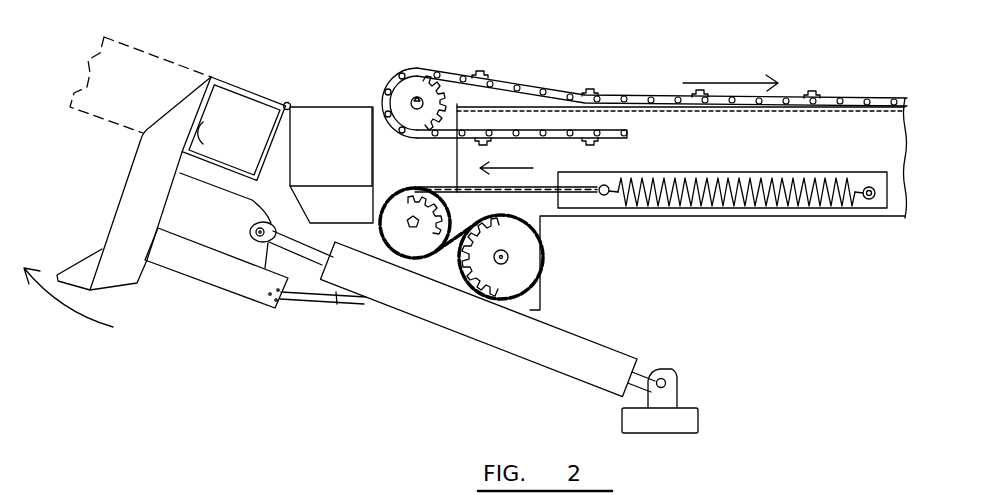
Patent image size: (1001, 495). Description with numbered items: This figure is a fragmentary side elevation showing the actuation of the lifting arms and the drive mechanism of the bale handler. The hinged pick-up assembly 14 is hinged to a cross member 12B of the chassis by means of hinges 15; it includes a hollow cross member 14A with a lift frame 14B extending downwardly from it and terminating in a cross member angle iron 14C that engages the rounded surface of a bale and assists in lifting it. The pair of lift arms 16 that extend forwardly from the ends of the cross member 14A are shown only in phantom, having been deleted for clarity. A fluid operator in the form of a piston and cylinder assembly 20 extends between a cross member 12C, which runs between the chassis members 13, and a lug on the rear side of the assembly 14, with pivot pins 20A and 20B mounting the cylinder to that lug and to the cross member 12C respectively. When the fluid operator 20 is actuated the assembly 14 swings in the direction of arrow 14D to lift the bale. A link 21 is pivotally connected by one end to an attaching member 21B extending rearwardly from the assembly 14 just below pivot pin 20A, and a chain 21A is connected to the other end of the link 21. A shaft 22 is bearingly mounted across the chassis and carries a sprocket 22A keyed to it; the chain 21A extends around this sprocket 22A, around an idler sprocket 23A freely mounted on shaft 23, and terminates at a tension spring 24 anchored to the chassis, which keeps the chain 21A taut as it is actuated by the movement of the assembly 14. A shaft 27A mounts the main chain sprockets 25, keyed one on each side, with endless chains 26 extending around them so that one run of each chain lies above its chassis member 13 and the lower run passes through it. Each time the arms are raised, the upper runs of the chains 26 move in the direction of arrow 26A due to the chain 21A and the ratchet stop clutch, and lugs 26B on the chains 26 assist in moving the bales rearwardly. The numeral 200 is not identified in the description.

The cross member 12B is at (356, 103).
The cross member 12C is at (693, 413).
The chassis members 13 is at (784, 112).
The hinged pick-up assembly 14 is at (269, 100).
The hollow cross member 14A is at (202, 137).
The lift frame 14B is at (138, 158).
The cross member angle iron 14C is at (88, 272).
The arrow 14D is at (65, 307).
The hinges 15 is at (287, 103).
The lift arms 16 is at (152, 67).
The piston and cylinder assembly 20 is at (585, 344).
The pivot pin 20A is at (255, 231).
The pivot pin 20B is at (668, 369).
The link 21 is at (322, 302).
The chain 21A is at (338, 298).
The attaching member 21B is at (233, 278).
The shaft 22 is at (513, 262).
The sprocket 22A is at (522, 252).
The shaft 23 is at (407, 219).
The idler sprocket 23A is at (433, 223).
The tension spring 24 is at (712, 198).
The main chain sprockets 25 is at (409, 91).
The endless chains 26 is at (581, 96).
The arrow 26A is at (747, 83).
The lugs 26B is at (838, 77).
The shaft 27A is at (415, 112).
The link 200 is at (252, 200).